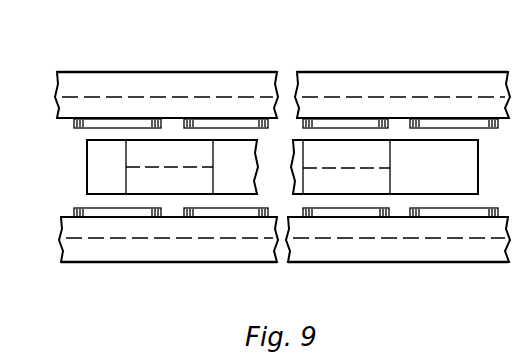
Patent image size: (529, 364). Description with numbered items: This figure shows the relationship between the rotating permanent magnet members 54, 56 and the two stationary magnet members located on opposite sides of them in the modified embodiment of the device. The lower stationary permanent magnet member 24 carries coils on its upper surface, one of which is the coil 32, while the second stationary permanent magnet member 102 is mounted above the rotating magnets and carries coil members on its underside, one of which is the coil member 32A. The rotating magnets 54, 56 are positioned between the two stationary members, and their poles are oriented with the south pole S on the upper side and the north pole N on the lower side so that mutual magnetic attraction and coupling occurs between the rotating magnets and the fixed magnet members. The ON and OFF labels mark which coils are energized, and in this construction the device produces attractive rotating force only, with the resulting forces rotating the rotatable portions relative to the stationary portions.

The second stationary permanent magnet member 102 is at (177, 80).
The coil member 32A is at (135, 123).
The coil 32 is at (97, 210).
The permanent magnet member 56 is at (147, 153).
The permanent magnet member 54 is at (372, 157).
The permanent magnet member 24 is at (133, 250).
The south pole S is at (80, 83).
The north pole N is at (72, 107).